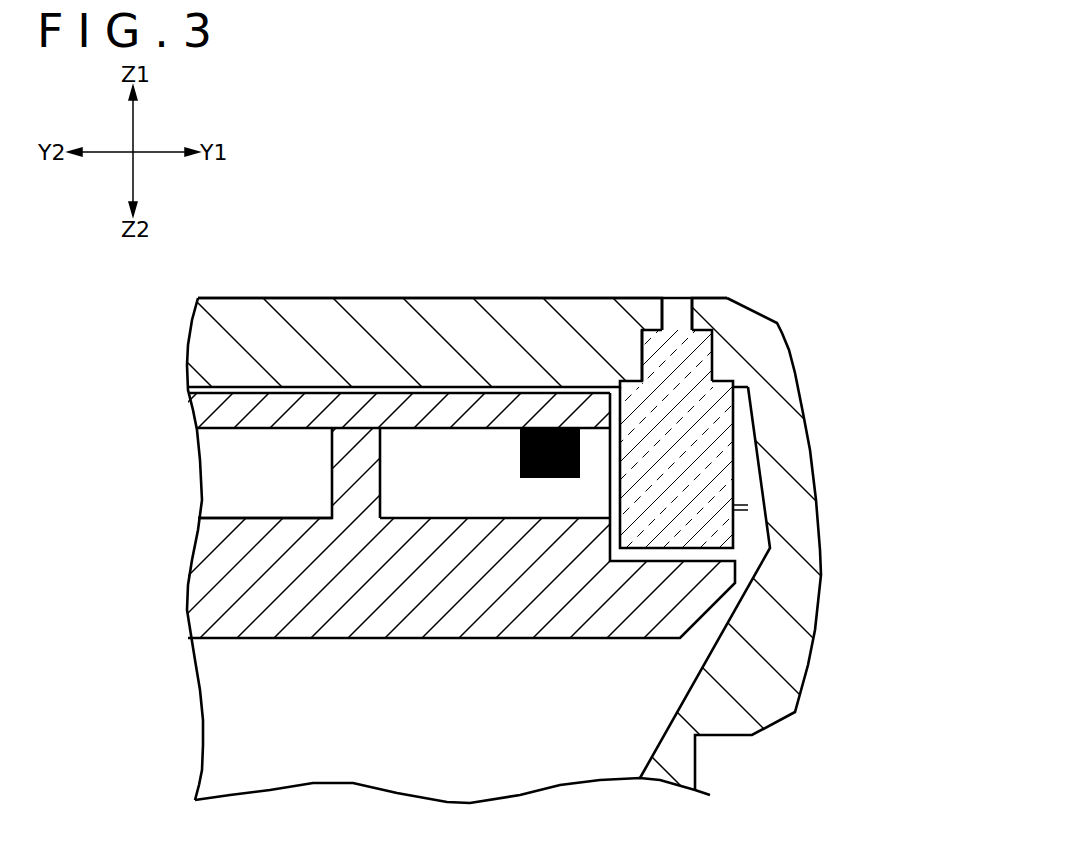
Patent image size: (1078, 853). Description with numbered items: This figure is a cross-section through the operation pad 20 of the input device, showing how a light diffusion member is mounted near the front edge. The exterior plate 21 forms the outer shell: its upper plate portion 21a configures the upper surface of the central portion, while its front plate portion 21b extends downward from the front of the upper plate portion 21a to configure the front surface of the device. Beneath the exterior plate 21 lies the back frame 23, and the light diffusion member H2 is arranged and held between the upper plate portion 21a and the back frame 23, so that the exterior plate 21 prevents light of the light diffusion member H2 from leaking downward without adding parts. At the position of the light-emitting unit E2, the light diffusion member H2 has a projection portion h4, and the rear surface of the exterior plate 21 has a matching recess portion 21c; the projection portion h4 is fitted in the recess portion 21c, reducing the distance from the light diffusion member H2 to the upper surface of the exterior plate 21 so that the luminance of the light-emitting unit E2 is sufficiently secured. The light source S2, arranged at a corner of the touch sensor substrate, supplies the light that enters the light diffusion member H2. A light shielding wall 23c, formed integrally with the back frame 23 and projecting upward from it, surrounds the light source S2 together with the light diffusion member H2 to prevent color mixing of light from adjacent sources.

The operation pad 20 is at (349, 296).
The exterior plate 21 is at (539, 522).
The upper plate portion 21a is at (523, 318).
The front plate portion 21b is at (815, 550).
The recess portion 21c is at (710, 354).
The light-emitting unit E2 is at (678, 307).
The projection portion h4 is at (654, 355).
The light diffusion member H2 is at (713, 440).
The back frame 23 is at (545, 540).
The light shielding wall 23c is at (345, 468).
The light source S2 is at (522, 449).